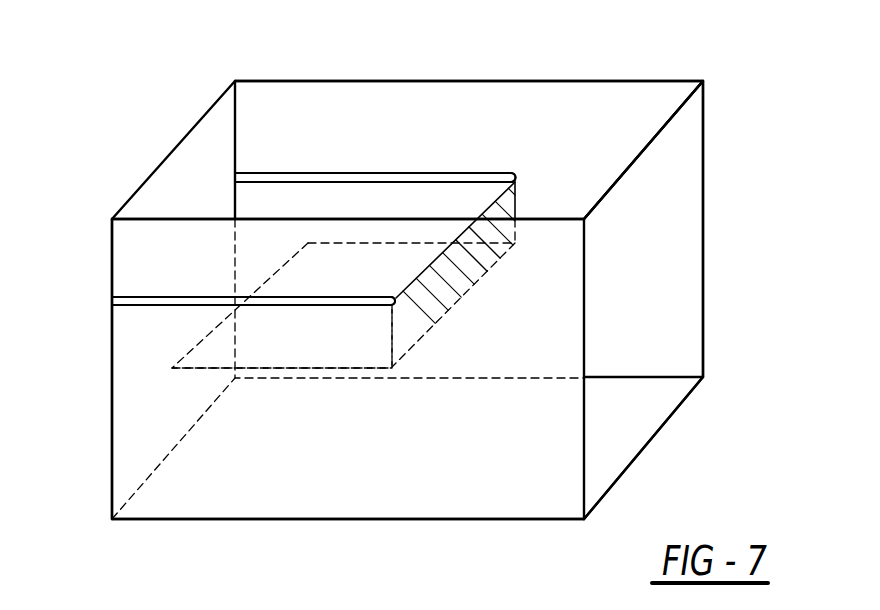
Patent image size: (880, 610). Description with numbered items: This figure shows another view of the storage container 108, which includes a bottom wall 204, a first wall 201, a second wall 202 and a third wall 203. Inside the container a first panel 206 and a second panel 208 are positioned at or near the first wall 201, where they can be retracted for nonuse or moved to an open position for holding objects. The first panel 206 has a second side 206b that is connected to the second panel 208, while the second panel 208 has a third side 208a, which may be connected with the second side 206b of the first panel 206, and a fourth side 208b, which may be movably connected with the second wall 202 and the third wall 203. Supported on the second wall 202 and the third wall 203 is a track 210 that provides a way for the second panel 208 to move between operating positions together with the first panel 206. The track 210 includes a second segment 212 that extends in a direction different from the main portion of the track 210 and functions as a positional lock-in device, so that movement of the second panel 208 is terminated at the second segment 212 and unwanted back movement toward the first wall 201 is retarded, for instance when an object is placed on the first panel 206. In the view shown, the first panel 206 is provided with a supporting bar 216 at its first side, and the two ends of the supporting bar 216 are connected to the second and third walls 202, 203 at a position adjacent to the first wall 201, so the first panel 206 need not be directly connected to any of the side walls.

The storage container 108 is at (164, 546).
The first wall 201 is at (199, 158).
The second wall 202 is at (127, 248).
The third wall 203 is at (633, 117).
The bottom wall 204 is at (605, 432).
The first panel 206 is at (299, 337).
The second side 206b is at (393, 342).
The second panel 208 is at (467, 257).
The third side 208a is at (487, 268).
The fourth side 208b is at (482, 208).
The track 210 is at (412, 173).
The second segment 212 is at (520, 180).
The supporting bar 216 is at (215, 330).